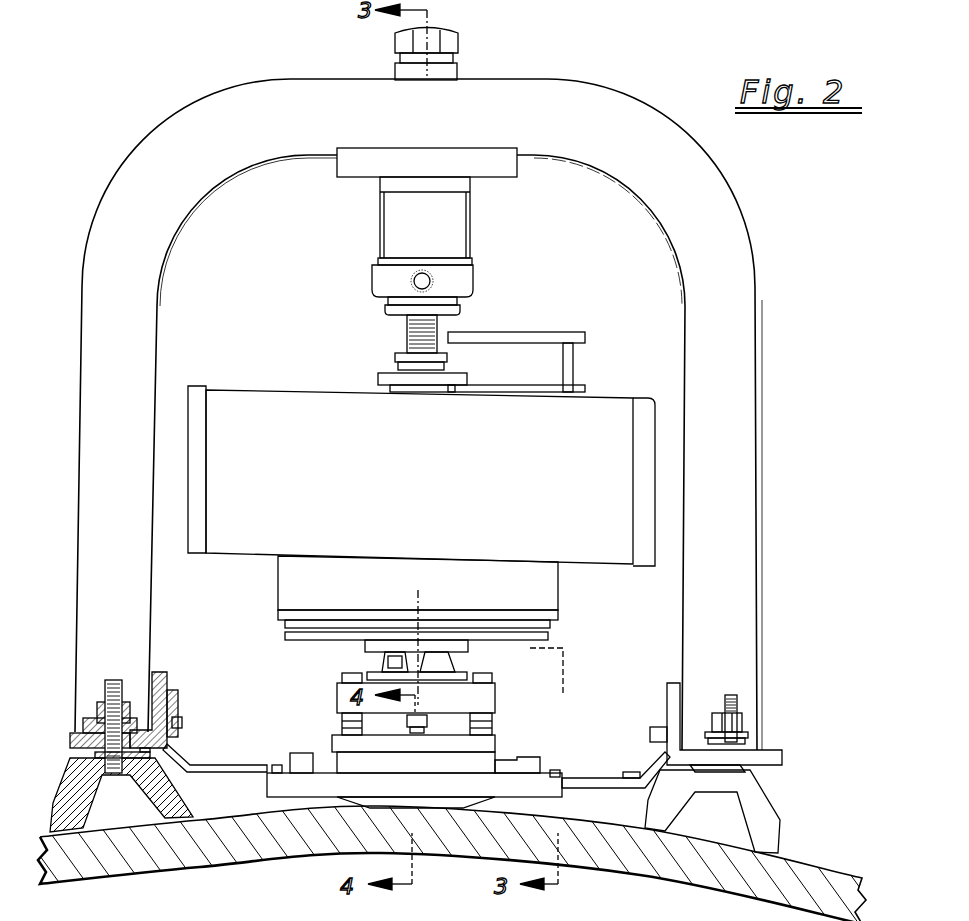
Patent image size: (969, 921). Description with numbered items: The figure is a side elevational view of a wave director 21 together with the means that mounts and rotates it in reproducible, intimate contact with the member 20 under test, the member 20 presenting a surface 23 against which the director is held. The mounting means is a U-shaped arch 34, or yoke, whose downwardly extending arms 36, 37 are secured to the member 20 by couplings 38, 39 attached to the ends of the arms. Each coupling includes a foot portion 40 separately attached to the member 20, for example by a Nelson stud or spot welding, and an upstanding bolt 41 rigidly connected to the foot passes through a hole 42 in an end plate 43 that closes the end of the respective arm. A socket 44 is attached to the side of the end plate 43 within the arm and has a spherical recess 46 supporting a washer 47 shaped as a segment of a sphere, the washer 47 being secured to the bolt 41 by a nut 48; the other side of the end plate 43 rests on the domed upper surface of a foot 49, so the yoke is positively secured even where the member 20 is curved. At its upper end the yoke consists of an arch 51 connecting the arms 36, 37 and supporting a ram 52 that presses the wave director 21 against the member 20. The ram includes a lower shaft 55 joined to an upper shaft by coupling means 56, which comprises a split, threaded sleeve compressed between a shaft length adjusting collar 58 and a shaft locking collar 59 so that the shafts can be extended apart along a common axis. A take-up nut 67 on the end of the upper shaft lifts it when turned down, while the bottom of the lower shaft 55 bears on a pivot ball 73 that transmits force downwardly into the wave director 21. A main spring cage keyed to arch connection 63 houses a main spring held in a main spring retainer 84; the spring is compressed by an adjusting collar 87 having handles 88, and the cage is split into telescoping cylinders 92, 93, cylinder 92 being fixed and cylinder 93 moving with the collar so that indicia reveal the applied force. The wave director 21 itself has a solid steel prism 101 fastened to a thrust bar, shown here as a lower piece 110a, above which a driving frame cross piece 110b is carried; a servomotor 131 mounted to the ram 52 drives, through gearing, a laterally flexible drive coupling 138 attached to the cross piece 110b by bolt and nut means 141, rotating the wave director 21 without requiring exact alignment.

The member under test 20 is at (265, 850).
The wave director 21 is at (818, 226).
The base surface 23 is at (570, 822).
The U-shaped arch 34 is at (628, 112).
The arm 36 is at (82, 408).
The arm 37 is at (760, 458).
The coupling 38 is at (62, 718).
The coupling 39 is at (826, 748).
The foot portion 40 is at (68, 795).
The upstanding bolt 41 is at (112, 680).
The hole 42 is at (95, 755).
The end plate 43 is at (70, 742).
The socket 44 is at (155, 705).
The spherical recess 46 is at (84, 722).
The washer 47 is at (135, 700).
The nut 48 is at (100, 705).
The foot 49 is at (150, 760).
The arch 51 is at (494, 76).
The ram 52 is at (442, 246).
The lower shaft 55 is at (429, 720).
The coupling means 56 is at (400, 353).
The shaft length adjusting collar 58 is at (398, 358).
The shaft locking collar 59 is at (380, 379).
The arch connection 63 is at (362, 163).
The take-up nut 67 is at (397, 40).
The pivot ball 73 is at (410, 730).
The main spring retainer 84 is at (472, 184).
The adjusting collar 87 is at (372, 279).
The handles 88 is at (433, 281).
The cylinder 92 is at (386, 210).
The cylinder 93 is at (384, 261).
The prism 101 is at (497, 763).
The lower plate 110a is at (497, 744).
The driving frame cross piece 110b is at (496, 700).
The servomotor 131 is at (536, 379).
The laterally flexible drive coupling 138 is at (366, 657).
The bolt and nut means 141 is at (346, 670).